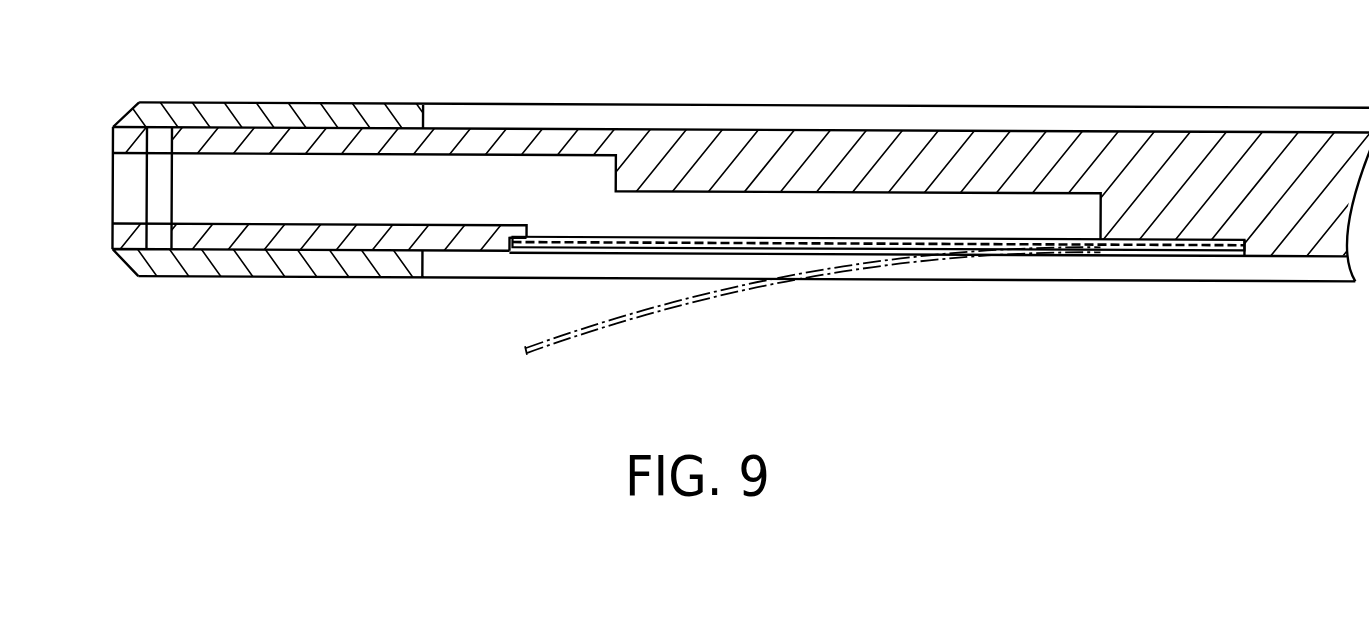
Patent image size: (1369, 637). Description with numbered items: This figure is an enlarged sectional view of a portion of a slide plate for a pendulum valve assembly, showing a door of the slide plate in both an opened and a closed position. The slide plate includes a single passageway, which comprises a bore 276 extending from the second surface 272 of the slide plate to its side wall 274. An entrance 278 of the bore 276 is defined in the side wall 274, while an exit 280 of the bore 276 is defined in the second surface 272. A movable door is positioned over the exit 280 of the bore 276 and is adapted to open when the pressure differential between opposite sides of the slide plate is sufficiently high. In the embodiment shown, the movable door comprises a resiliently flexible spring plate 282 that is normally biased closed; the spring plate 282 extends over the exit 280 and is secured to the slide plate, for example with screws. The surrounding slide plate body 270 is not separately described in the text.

The outer tubular member 270 is at (738, 100).
The second surface 272 is at (302, 276).
The side wall 274 is at (113, 129).
The bore 276 is at (307, 165).
The entrance 278 is at (125, 208).
The exit 280 is at (528, 227).
The spring plate 282 is at (547, 252).